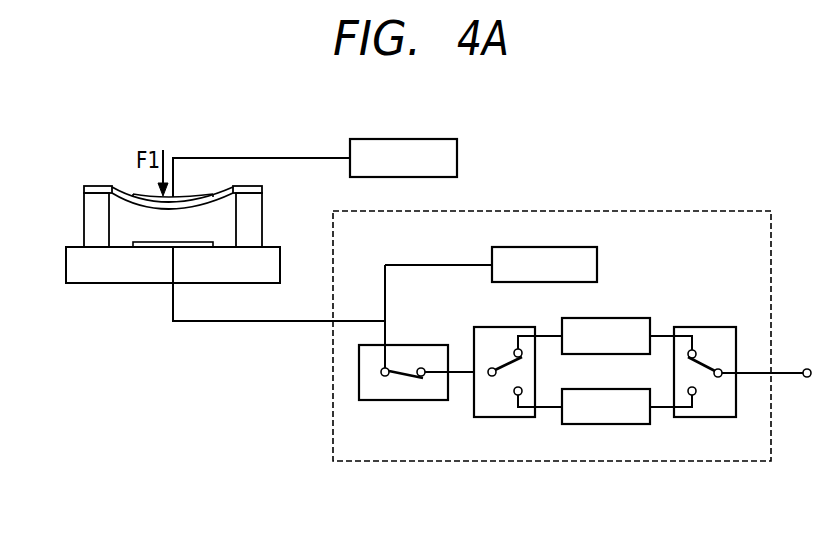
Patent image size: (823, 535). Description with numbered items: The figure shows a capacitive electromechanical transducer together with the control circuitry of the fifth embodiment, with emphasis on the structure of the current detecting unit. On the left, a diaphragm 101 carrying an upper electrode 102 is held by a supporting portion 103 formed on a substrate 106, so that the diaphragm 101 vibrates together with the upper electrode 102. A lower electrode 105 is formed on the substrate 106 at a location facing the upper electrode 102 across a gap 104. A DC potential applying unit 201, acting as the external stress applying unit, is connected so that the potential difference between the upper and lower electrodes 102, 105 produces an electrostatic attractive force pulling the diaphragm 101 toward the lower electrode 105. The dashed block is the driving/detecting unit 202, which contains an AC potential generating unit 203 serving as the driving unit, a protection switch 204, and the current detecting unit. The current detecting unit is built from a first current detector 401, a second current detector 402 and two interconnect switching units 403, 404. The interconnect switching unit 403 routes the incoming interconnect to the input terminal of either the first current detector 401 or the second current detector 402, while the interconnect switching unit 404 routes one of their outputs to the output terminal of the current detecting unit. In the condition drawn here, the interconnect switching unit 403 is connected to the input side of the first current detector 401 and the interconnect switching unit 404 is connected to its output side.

The diaphragm 101 is at (90, 187).
The upper electrode 102 is at (135, 193).
The supporting portion 103 is at (88, 220).
The gap 104 is at (192, 223).
The lower electrode 105 is at (143, 245).
The substrate 106 is at (152, 277).
The DC potential applying unit 201 is at (412, 139).
The driving/detecting unit 202 is at (528, 211).
The AC potential generating unit 203 is at (572, 247).
The protection switch 204 is at (358, 373).
The first current detector 401 is at (632, 318).
The second current detector 402 is at (607, 427).
The interconnect switching unit 403 is at (502, 412).
The interconnect switching unit 404 is at (708, 412).